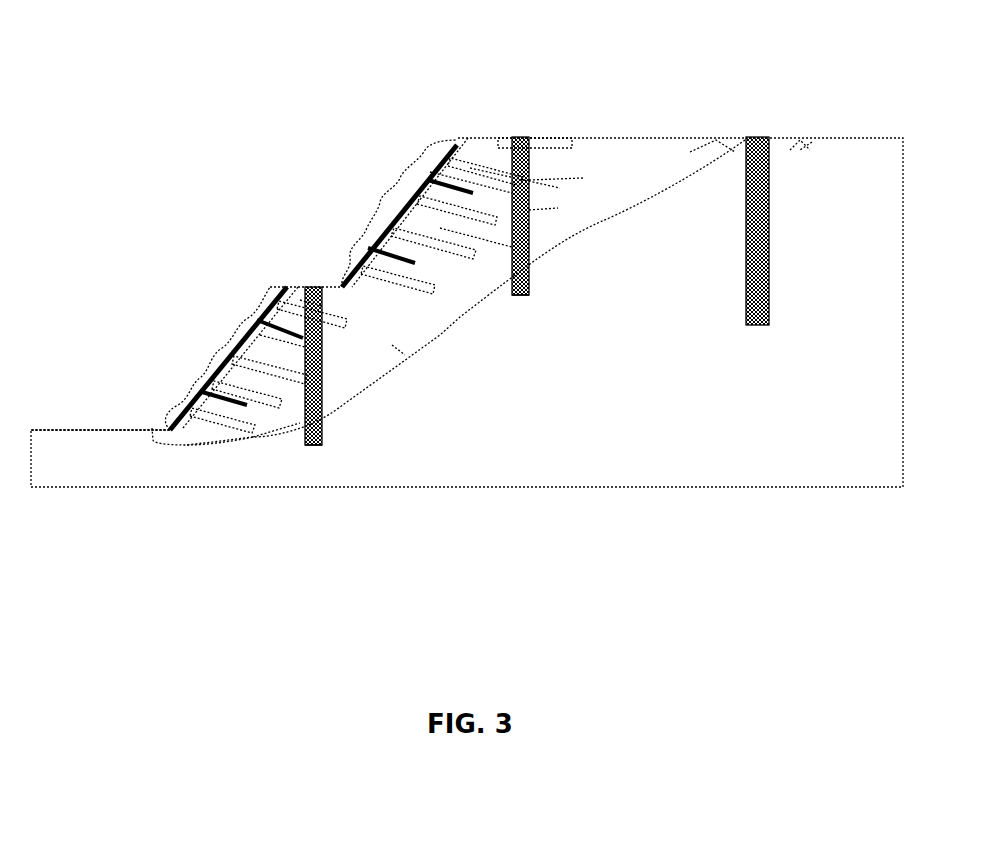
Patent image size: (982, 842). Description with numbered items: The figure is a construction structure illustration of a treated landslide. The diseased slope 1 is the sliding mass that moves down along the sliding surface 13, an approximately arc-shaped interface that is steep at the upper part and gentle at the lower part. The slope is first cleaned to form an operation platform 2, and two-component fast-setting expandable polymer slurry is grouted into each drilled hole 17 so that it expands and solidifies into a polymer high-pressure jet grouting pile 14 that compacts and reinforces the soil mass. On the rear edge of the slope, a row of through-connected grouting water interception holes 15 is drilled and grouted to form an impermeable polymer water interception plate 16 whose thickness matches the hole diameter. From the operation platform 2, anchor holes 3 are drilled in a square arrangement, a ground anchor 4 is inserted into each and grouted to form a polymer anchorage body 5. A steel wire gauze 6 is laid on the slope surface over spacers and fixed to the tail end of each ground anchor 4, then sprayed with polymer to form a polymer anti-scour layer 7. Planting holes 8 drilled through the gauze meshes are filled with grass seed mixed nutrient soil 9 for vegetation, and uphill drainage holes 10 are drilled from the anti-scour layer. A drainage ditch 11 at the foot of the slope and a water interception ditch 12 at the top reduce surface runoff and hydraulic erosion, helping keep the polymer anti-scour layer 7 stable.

The diseased slope 1 is at (472, 138).
The operation platform 2 is at (311, 287).
The anchor hole 3 is at (473, 313).
The ground anchor 4 is at (377, 217).
The polymer anchorage body 5 is at (410, 200).
The steel wire gauze 6 is at (452, 145).
The polymer anti-scour layer 7 is at (267, 277).
The planting hole 8 is at (240, 433).
The grass seed mixed nutrient soil 9 is at (232, 437).
The uphill drainage hole 10 is at (396, 350).
The drainage ditch 11 is at (137, 430).
The water interception ditch 12 is at (545, 145).
The sliding surface 13 is at (557, 247).
The polymer high-pressure jet grouting pile 14 is at (322, 440).
The grouting water interception hole 15 is at (770, 162).
The polymer water interception plate 16 is at (743, 170).
The drilled hole 17 is at (315, 448).